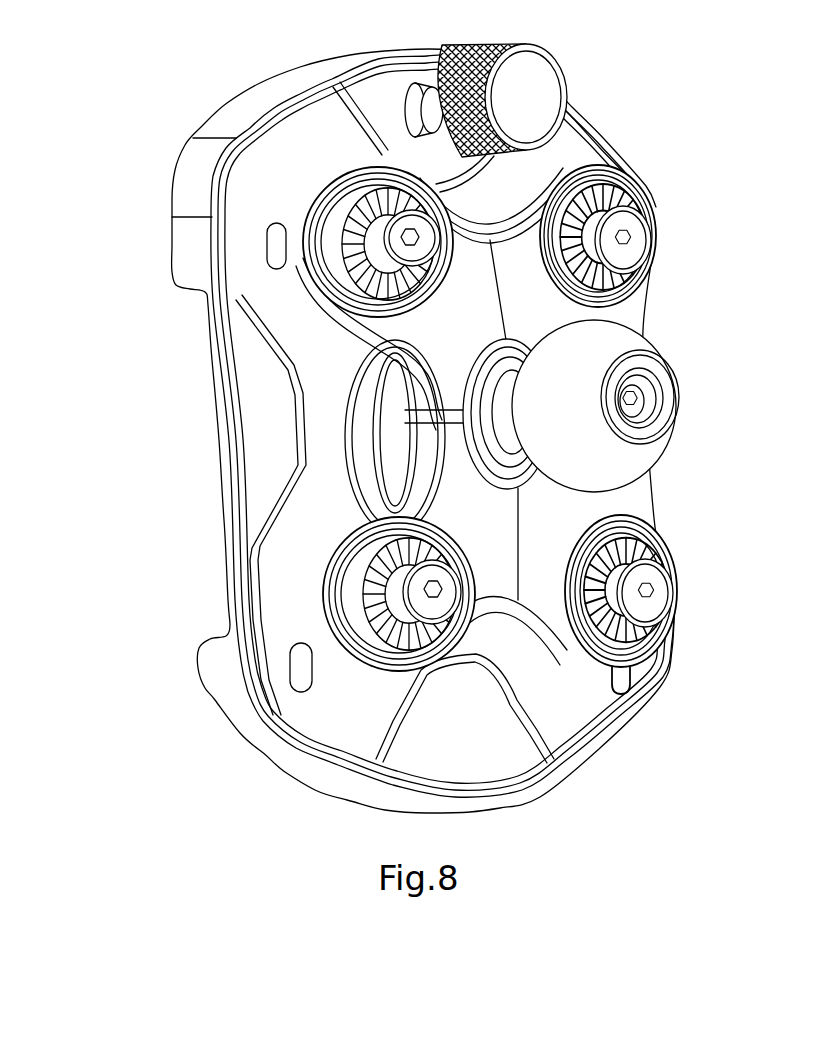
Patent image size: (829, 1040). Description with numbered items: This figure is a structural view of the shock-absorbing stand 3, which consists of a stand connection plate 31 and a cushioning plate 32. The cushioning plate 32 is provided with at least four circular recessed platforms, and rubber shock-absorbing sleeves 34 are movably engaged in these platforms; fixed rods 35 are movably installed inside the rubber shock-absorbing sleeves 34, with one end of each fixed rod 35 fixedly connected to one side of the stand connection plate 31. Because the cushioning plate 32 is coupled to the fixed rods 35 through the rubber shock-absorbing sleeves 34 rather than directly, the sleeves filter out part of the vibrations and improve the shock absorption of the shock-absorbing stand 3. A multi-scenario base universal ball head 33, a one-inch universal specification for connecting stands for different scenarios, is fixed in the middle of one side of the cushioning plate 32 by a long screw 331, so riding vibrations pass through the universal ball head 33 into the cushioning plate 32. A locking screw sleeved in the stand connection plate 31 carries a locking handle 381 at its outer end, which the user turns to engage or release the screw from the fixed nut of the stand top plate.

The shock-absorbing stand 3 is at (172, 212).
The stand connection plate 31 is at (303, 578).
The cushioning plate 32 is at (462, 328).
The multi-scenario base universal ball head 33 is at (644, 384).
The long screw 331 is at (688, 394).
The rubber shock-absorbing sleeve 34 is at (580, 203).
The fixed rod 35 is at (405, 240).
The locking handle 381 is at (518, 107).